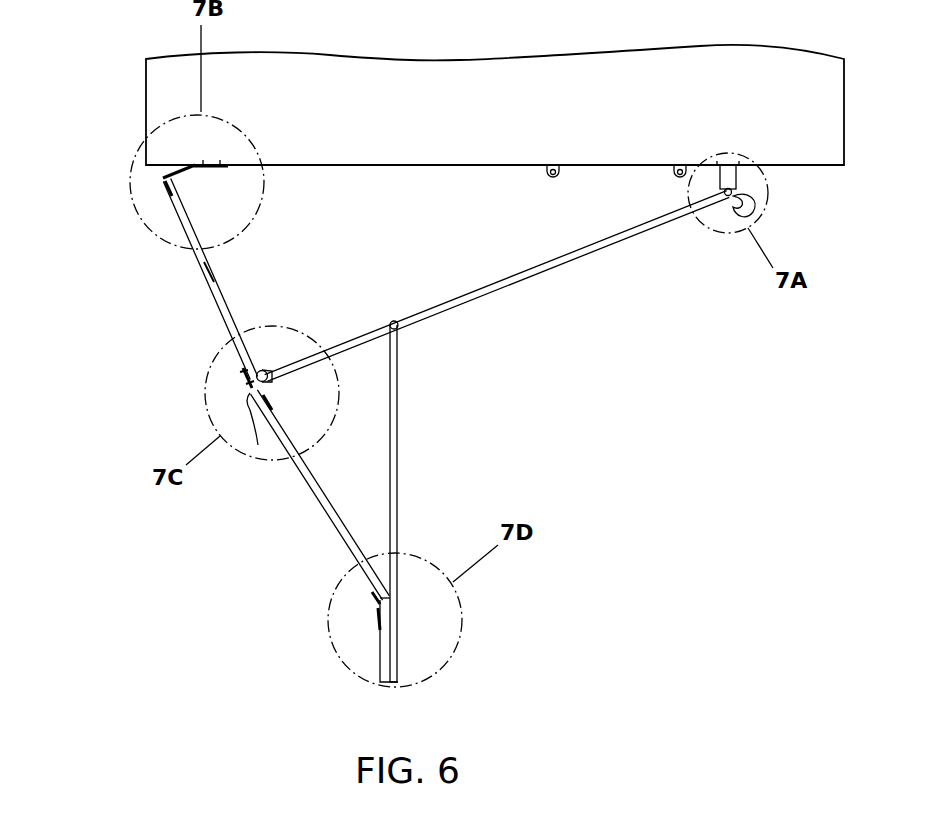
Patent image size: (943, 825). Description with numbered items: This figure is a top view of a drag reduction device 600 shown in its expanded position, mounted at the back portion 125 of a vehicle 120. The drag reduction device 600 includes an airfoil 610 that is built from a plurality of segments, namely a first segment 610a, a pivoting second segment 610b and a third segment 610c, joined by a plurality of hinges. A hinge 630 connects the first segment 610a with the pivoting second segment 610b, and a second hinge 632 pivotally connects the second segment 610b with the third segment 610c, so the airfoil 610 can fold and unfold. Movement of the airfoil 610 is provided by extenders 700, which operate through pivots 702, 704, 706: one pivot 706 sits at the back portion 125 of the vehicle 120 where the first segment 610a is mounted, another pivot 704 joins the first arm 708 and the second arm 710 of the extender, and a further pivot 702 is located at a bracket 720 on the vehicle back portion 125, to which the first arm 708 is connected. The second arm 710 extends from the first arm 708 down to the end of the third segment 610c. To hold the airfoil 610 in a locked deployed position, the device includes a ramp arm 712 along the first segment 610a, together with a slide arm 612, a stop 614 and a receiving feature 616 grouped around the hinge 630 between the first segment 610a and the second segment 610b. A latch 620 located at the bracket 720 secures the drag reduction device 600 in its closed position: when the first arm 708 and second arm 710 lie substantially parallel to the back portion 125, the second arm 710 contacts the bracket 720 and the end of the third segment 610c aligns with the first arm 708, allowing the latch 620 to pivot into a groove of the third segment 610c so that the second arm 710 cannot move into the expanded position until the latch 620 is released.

The vehicle 120 is at (468, 116).
The back portion 125 is at (437, 166).
The drag reduction device 600 is at (108, 275).
The airfoil 610 is at (237, 473).
The first segment 610a is at (222, 275).
The second segment 610b is at (333, 525).
The third segment 610c is at (380, 660).
The slide arm 612 is at (266, 369).
The stop 614 is at (277, 395).
The receiving feature 616 is at (250, 392).
The latch 620 is at (757, 212).
The hinge 630 is at (258, 445).
The hinge 632 is at (378, 606).
The extenders 700 is at (474, 342).
The pivot 702 is at (726, 198).
The pivot 704 is at (395, 321).
The pivot 706 is at (193, 165).
The first arm 708 is at (591, 247).
The second arm 710 is at (393, 473).
The ramp arm 712 is at (228, 268).
The bracket 720 is at (727, 164).